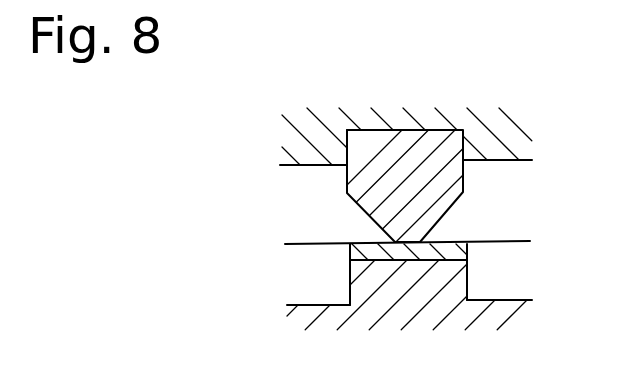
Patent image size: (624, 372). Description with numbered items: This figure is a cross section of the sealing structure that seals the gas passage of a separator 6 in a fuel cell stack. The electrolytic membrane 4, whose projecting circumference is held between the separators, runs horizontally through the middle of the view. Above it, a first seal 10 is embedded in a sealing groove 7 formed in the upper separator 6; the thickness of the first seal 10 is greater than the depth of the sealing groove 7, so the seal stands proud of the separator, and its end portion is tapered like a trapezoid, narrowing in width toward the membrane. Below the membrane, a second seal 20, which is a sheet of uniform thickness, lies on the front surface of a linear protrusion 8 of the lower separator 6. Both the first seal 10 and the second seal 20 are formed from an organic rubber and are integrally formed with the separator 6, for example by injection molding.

The electrolytic membrane 4 is at (318, 243).
The separator 6 is at (313, 165).
The sealing groove 7 is at (361, 130).
The linear protrusion 8 is at (470, 276).
The first seal 10 is at (465, 182).
The second seal 20 is at (443, 242).